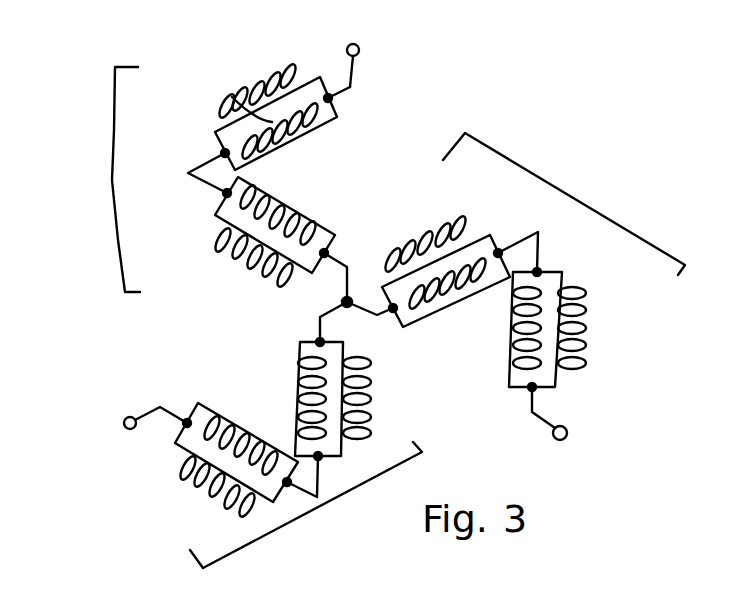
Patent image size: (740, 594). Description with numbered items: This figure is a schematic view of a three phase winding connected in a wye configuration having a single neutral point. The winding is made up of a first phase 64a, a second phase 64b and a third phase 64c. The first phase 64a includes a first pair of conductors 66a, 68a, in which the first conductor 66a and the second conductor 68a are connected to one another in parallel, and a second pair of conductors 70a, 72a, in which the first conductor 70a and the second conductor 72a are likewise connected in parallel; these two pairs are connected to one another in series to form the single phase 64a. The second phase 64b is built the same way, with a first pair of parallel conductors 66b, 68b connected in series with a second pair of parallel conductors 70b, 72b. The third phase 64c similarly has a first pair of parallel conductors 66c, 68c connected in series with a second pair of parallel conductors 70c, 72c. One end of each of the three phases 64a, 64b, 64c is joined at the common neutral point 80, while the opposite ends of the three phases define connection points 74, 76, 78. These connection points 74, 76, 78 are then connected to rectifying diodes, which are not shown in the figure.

The first phase 64a is at (112, 190).
The second phase 64b is at (597, 200).
The third phase 64c is at (260, 537).
The first conductor 66a is at (273, 85).
The second conductor 68a is at (236, 100).
The first conductor 70a is at (235, 256).
The second conductor 72a is at (280, 262).
The first conductor 66b is at (580, 322).
The second conductor 68b is at (537, 350).
The first conductor 70b is at (440, 232).
The second conductor 72b is at (408, 262).
The first conductor 66c is at (213, 467).
The second conductor 68c is at (227, 477).
The first conductor 70c is at (370, 380).
The second conductor 72c is at (328, 420).
The connection point 74 is at (362, 47).
The connection point 76 is at (557, 440).
The connection point 78 is at (124, 430).
The neutral point 80 is at (342, 302).